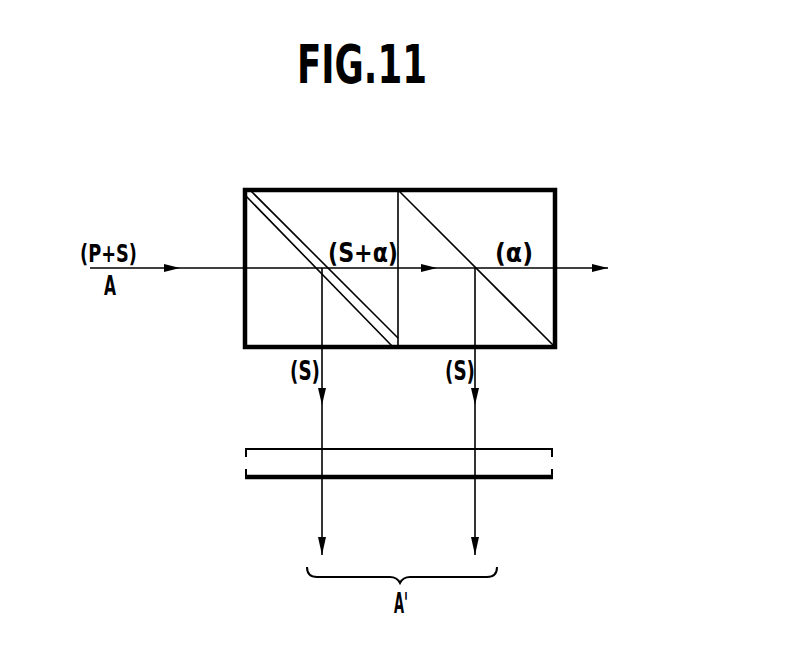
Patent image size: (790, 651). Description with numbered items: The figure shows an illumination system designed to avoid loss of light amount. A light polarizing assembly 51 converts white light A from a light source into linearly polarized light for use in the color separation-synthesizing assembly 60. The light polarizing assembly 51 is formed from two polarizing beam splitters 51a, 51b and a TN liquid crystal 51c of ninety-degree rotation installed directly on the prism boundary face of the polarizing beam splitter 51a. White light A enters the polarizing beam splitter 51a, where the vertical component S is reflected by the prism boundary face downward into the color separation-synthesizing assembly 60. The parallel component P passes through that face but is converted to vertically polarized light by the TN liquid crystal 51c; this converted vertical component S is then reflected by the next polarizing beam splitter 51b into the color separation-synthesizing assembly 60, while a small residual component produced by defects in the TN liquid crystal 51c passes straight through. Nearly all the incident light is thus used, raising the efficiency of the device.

The light polarizing assembly 51 is at (406, 235).
The polarizing beam splitter 51a is at (253, 317).
The polarizing beam splitter 51b is at (466, 197).
The TN liquid crystal 51c is at (247, 190).
The color separation-synthesizing assembly 60 is at (536, 455).